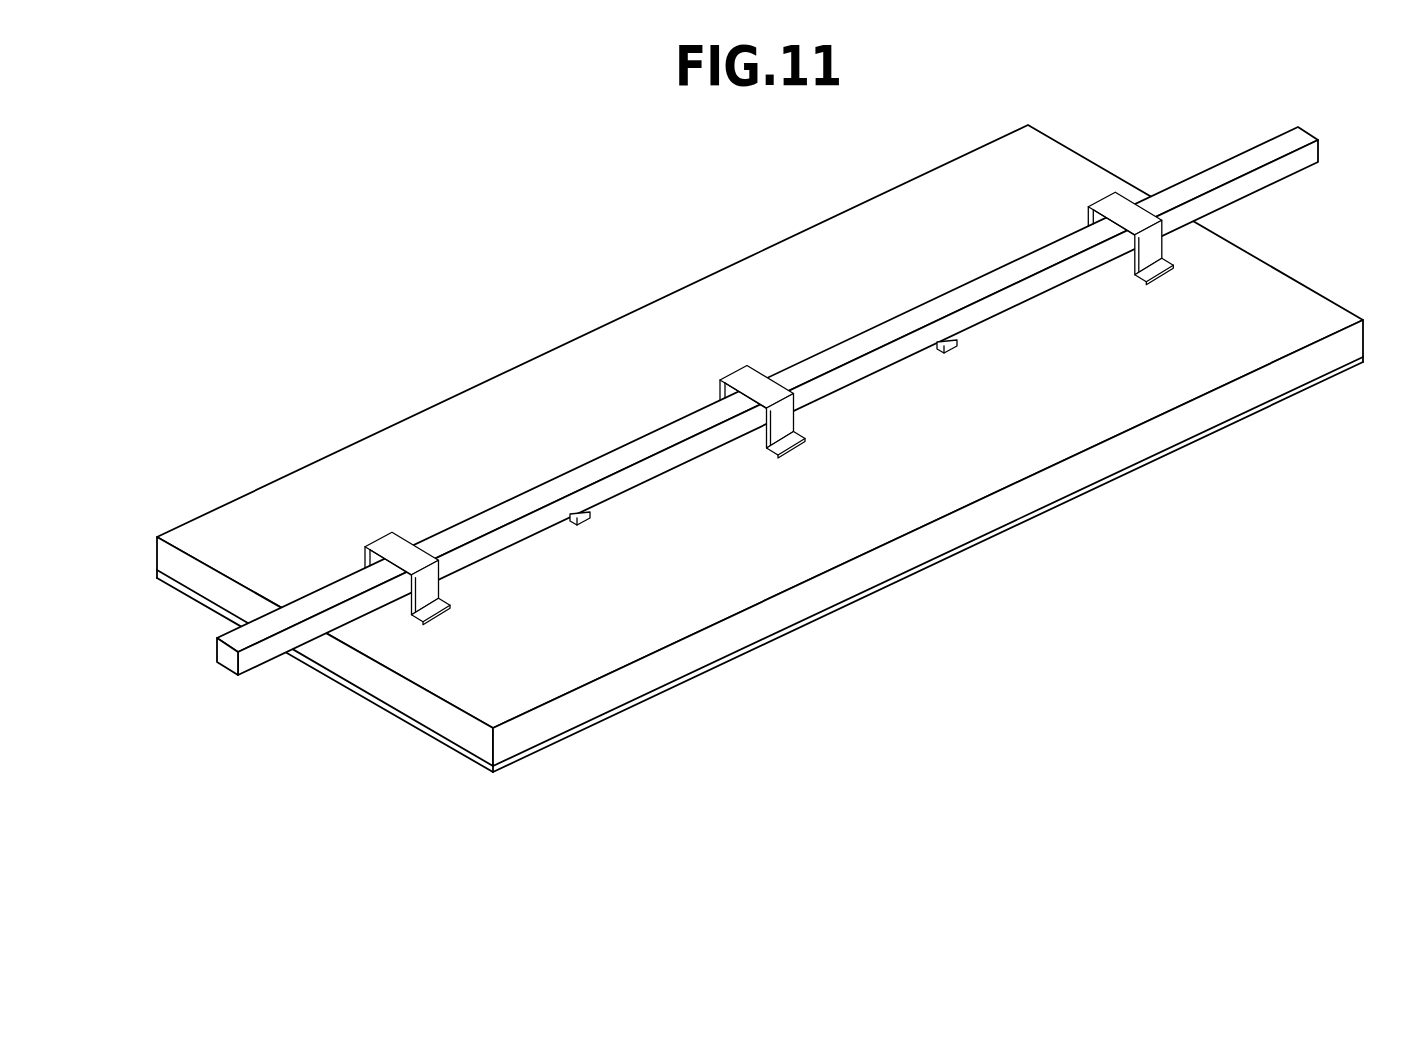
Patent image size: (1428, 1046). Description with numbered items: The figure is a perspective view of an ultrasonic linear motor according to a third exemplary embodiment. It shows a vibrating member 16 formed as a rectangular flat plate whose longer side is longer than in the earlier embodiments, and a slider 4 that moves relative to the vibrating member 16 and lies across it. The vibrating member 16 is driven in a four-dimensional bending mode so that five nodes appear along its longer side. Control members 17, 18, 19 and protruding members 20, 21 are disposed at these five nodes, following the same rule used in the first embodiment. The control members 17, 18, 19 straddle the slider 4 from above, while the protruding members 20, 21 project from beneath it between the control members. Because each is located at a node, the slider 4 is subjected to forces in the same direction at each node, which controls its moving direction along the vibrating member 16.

The slider 4 is at (1213, 177).
The vibrating member 16 is at (1130, 508).
The control member 17 is at (388, 543).
The control member 18 is at (743, 377).
The control member 19 is at (1108, 203).
The protruding member 20 is at (575, 525).
The protruding member 21 is at (941, 352).